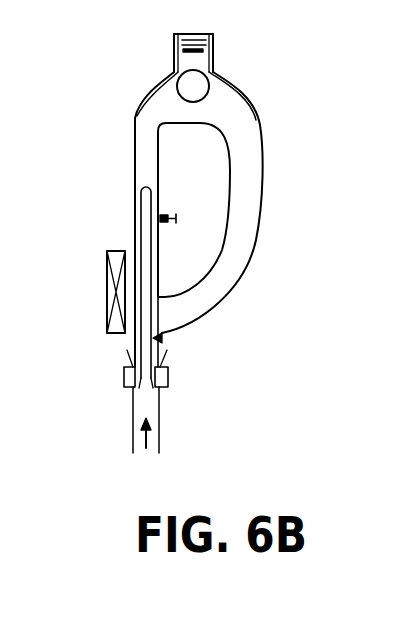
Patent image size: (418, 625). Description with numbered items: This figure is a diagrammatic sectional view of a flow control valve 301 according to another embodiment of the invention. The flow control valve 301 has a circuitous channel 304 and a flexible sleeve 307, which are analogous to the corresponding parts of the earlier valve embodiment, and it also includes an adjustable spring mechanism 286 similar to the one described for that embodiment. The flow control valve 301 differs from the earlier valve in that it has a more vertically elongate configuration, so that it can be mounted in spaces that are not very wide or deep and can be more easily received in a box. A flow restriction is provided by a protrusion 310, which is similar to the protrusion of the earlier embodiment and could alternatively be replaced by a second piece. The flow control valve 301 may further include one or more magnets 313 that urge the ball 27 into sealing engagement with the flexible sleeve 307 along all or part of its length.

The ball 27 is at (191, 91).
The adjustable spring mechanism 286 is at (168, 216).
The flow control valve 301 is at (208, 243).
The circuitous channel 304 is at (225, 285).
The flexible sleeve 307 is at (143, 240).
The protrusion 310 is at (161, 338).
The magnets 313 is at (106, 307).